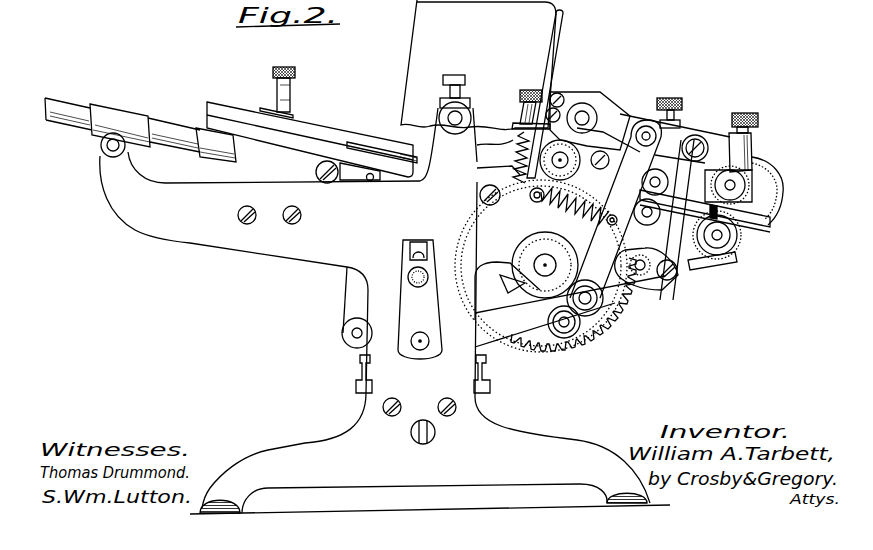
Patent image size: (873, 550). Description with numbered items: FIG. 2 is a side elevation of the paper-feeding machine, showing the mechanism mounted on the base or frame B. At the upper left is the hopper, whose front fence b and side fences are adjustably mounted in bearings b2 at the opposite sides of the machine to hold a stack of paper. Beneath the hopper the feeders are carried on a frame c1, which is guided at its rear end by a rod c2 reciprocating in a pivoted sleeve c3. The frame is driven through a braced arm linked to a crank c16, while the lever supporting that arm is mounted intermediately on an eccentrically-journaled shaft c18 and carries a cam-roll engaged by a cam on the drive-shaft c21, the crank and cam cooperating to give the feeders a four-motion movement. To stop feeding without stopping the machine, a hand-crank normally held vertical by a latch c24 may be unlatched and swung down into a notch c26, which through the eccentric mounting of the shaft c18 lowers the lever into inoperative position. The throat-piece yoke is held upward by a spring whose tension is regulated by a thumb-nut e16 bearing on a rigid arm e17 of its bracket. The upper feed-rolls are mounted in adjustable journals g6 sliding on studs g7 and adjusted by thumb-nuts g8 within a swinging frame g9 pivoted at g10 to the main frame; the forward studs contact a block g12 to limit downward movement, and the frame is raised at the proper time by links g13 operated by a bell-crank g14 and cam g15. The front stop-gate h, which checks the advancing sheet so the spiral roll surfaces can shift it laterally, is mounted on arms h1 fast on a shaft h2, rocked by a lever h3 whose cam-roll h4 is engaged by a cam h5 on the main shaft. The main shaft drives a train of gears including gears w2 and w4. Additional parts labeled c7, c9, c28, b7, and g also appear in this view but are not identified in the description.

The base or frame B is at (385, 311).
The frame c1 is at (221, 112).
The rod c2 is at (165, 128).
The pivoted sleeve c3 is at (114, 112).
The plate c7 is at (316, 118).
The thumb screw c9 is at (292, 78).
The crank c16 is at (502, 289).
The eccentrically-journaled shaft c18 is at (421, 348).
The drive-shaft c21 is at (540, 262).
The latch c24 is at (420, 242).
The notch c26 is at (436, 433).
The roller c28 is at (415, 296).
The front fence b is at (565, 60).
The bearings b2 is at (462, 115).
The plate b7 is at (478, 65).
The thumb-nut e16 is at (530, 90).
The rigid arm e17 is at (512, 128).
The frame plate g is at (775, 251).
The adjustable journals g6 is at (688, 130).
The studs g7 is at (690, 245).
The thumb-nuts g8 is at (758, 122).
The swinging frame g9 is at (642, 120).
The pivot g10 is at (588, 112).
The block g12 is at (722, 250).
The links g13 is at (745, 185).
The bell-crank g14 is at (618, 310).
The cam g15 is at (581, 287).
The stop-gate h is at (770, 220).
The arms h1 is at (772, 165).
The shaft h2 is at (670, 125).
The lever h3 is at (648, 125).
The cam-roll h4 is at (545, 268).
The cam h5 is at (530, 196).
The gear w2 is at (670, 280).
The gear w4 is at (718, 258).